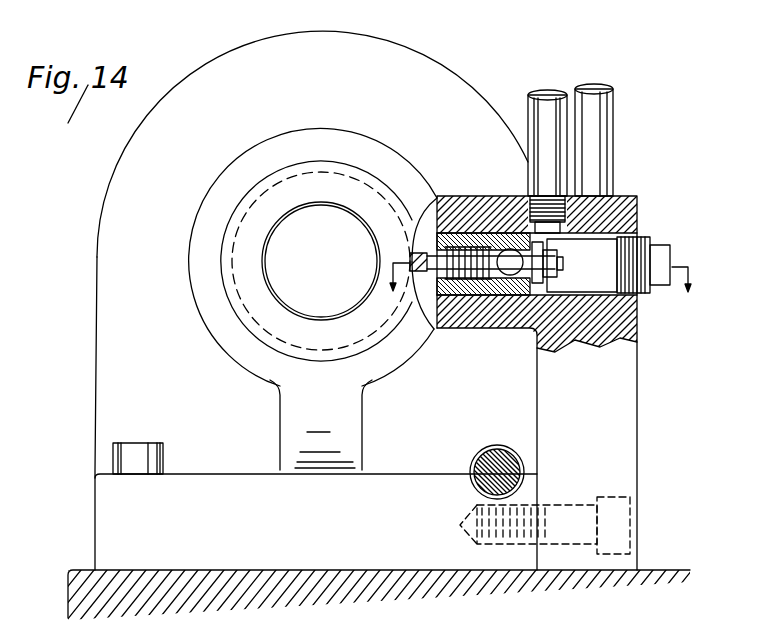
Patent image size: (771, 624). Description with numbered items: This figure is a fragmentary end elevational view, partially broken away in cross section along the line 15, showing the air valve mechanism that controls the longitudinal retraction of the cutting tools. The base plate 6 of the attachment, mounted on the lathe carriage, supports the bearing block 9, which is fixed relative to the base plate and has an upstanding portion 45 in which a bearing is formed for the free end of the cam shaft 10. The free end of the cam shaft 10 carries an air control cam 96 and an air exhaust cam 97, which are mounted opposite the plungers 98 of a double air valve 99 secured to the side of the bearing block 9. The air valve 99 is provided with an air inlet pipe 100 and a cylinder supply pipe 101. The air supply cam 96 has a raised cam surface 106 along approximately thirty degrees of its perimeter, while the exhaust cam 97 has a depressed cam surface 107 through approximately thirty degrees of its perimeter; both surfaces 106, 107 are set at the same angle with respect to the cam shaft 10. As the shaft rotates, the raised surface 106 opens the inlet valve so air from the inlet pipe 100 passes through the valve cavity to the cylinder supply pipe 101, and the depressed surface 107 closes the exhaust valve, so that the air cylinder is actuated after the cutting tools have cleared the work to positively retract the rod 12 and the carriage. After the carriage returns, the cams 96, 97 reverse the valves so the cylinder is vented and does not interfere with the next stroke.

The base plate 6 is at (68, 584).
The bearing block 9 is at (389, 495).
The cam shaft 10 is at (300, 218).
The rod 12 is at (504, 455).
The section line 15 is at (540, 290).
The upstanding portion 45 is at (110, 182).
The air control cam 96 is at (243, 310).
The air exhaust cam 97 is at (222, 275).
The plungers 98 is at (412, 246).
The double air valve 99 is at (620, 206).
The air inlet pipe 100 is at (612, 122).
The cylinder supply pipe 101 is at (538, 95).
The raised cam surface 106 is at (436, 201).
The depressed cam surface 107 is at (432, 328).